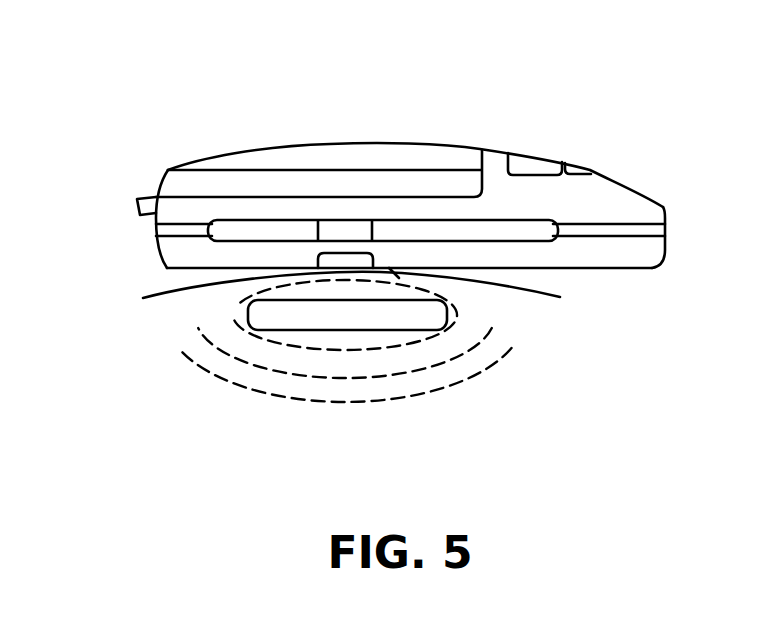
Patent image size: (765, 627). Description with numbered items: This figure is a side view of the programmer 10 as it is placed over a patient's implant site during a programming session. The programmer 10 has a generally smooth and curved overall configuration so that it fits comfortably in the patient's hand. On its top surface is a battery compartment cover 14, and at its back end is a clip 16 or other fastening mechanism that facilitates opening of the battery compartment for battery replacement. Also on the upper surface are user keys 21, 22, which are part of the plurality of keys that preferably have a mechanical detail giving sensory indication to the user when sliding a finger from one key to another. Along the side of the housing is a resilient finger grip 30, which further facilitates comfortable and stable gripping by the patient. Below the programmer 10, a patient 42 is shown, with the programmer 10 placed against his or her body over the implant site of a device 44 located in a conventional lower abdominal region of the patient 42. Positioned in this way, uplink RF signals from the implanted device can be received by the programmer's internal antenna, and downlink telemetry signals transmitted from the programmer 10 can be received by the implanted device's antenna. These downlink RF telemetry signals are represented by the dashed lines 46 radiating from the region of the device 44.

The programmer 10 is at (490, 96).
The battery compartment cover 14 is at (372, 185).
The clip 16 is at (137, 204).
The user key 21 is at (577, 168).
The user key 22 is at (530, 166).
The resilient finger grip 30 is at (536, 234).
The patient 42 is at (165, 288).
The device 44 is at (275, 323).
The dashed lines 46 is at (465, 397).